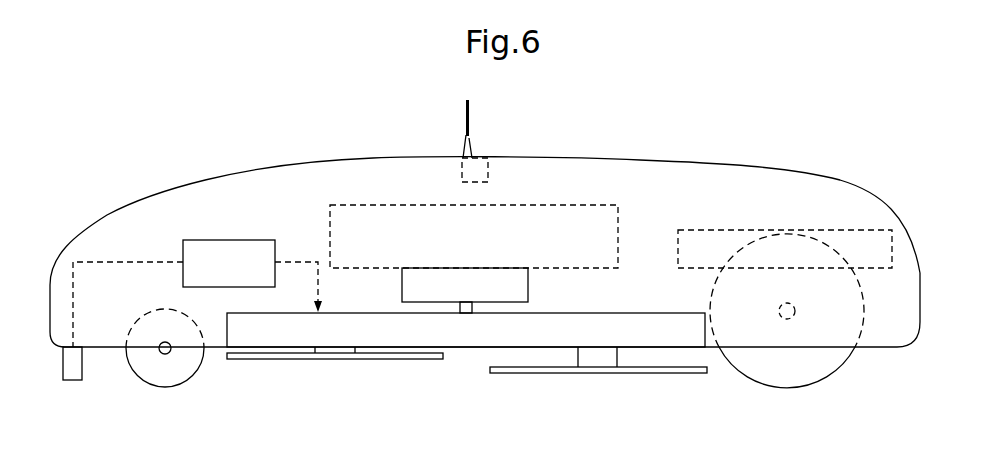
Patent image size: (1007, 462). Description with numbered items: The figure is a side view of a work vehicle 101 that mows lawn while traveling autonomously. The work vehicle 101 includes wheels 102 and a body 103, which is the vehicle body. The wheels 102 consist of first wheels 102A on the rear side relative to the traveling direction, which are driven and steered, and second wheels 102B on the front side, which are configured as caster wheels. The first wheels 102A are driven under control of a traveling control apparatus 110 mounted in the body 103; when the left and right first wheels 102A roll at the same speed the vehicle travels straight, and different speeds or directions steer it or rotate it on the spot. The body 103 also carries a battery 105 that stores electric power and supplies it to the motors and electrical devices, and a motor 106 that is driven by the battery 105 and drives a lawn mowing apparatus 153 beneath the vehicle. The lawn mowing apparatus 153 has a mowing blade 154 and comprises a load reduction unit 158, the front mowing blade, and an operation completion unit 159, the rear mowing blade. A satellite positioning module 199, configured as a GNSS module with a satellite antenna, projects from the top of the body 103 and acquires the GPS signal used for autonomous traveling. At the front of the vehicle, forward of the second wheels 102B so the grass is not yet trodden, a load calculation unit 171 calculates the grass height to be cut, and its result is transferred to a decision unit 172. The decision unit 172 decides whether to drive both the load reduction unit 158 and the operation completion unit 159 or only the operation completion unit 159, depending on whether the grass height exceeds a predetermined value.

The work vehicle 101 is at (252, 157).
The wheels 102 is at (497, 347).
The first wheels 102A is at (792, 377).
The second wheels 102B is at (164, 380).
The body 103 is at (838, 177).
The battery 105 is at (378, 208).
The motor 106 is at (528, 287).
The traveling control apparatus 110 is at (752, 228).
The lawn mowing apparatus 153 is at (473, 340).
The mowing blade 154 is at (471, 395).
The load reduction unit 158 is at (243, 360).
The operation completion unit 159 is at (694, 373).
The load calculation unit 171 is at (78, 382).
The decision unit 172 is at (243, 240).
The satellite positioning module 199 is at (468, 120).